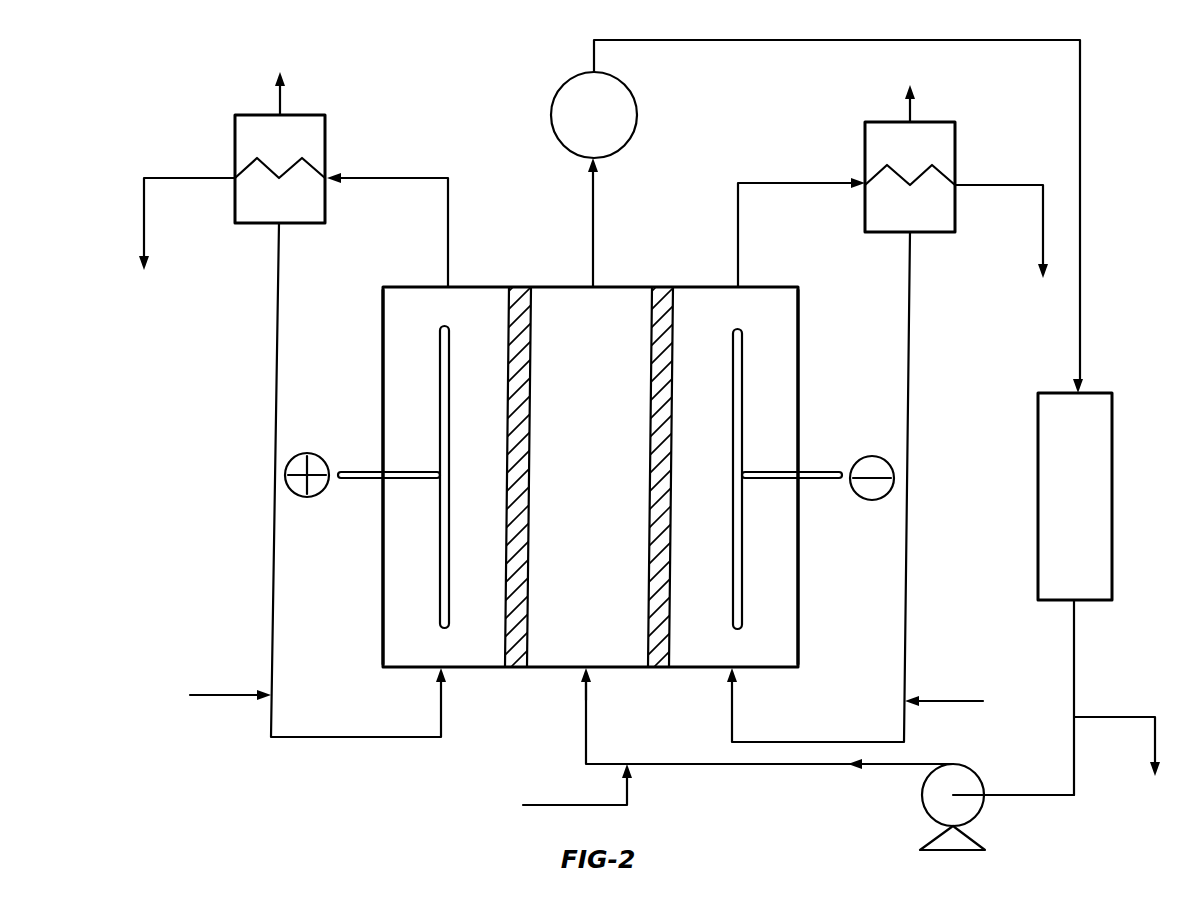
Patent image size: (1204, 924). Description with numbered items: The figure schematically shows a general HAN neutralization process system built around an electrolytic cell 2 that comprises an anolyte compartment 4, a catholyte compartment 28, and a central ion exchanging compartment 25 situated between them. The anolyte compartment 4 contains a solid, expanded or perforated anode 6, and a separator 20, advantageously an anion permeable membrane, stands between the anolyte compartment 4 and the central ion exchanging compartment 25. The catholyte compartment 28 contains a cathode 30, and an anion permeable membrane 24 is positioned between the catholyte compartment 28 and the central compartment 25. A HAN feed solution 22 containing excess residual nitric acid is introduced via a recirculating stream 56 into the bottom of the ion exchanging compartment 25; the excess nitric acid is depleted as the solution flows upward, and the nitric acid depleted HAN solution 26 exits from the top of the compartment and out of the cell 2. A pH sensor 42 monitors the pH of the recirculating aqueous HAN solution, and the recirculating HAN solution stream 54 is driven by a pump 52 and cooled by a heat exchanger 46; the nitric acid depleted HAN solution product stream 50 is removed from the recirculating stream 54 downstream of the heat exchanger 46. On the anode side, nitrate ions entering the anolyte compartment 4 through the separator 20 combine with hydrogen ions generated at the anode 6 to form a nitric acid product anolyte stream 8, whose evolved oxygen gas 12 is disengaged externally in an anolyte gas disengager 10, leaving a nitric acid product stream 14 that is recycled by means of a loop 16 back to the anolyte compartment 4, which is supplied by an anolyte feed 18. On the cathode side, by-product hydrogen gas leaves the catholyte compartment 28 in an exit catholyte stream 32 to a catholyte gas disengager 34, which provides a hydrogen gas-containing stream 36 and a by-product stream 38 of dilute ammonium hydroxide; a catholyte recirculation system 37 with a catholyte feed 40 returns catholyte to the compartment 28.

The electrolytic cell 2 is at (364, 659).
The anolyte compartment 4 is at (392, 568).
The anode 6 is at (438, 387).
The nitric acid product anolyte stream 8 is at (447, 222).
The anolyte gas disengager 10 is at (233, 202).
The oxygen gas 12 is at (280, 79).
The nitric acid product stream 14 is at (181, 244).
The loop 16 is at (275, 412).
The anolyte feed 18 is at (211, 695).
The separator 20 is at (517, 287).
The HAN feed solution 22 is at (557, 792).
The anion permeable membrane 24 is at (665, 287).
The central ion exchanging compartment 25 is at (565, 502).
The nitric acid depleted HAN solution 26 is at (592, 232).
The catholyte compartment 28 is at (777, 607).
The cathode 30 is at (740, 408).
The exit catholyte stream 32 is at (739, 222).
The catholyte gas disengager 34 is at (955, 213).
The hydrogen gas-containing stream 36 is at (910, 88).
The catholyte recirculation system 37 is at (905, 597).
The by-product stream 38 is at (1007, 251).
The catholyte feed 40 is at (964, 701).
The pH sensor 42 is at (552, 110).
The heat exchanger 46 is at (1038, 505).
The nitric acid depleted HAN solution product stream 50 is at (1122, 765).
The pump 52 is at (922, 803).
The recirculating HAN solution stream 54 is at (745, 765).
The recirculating stream 56 is at (586, 722).